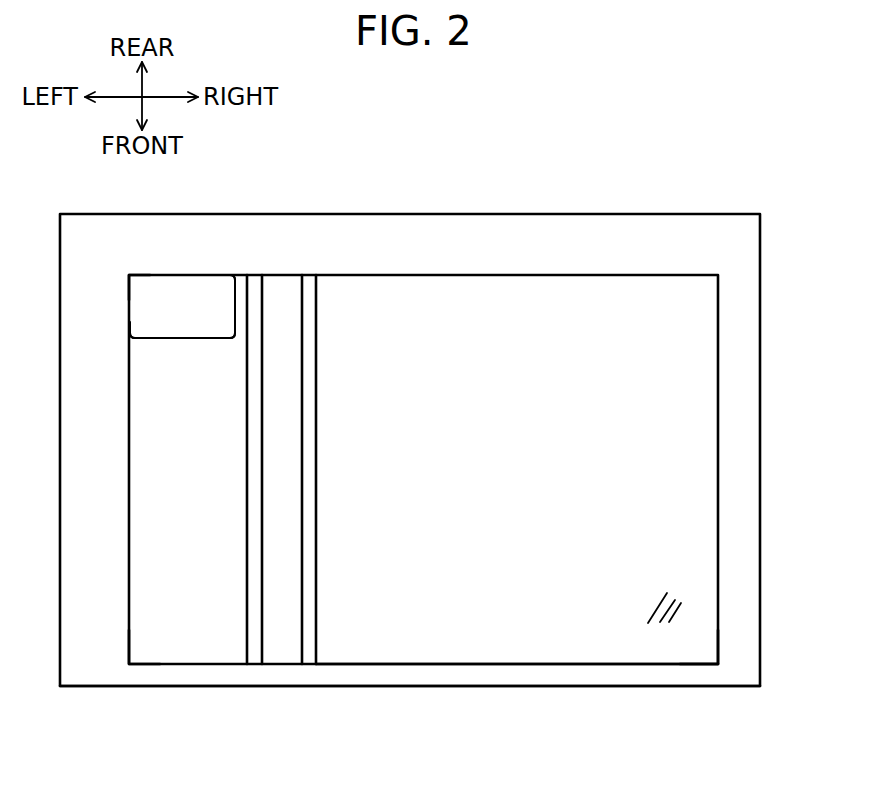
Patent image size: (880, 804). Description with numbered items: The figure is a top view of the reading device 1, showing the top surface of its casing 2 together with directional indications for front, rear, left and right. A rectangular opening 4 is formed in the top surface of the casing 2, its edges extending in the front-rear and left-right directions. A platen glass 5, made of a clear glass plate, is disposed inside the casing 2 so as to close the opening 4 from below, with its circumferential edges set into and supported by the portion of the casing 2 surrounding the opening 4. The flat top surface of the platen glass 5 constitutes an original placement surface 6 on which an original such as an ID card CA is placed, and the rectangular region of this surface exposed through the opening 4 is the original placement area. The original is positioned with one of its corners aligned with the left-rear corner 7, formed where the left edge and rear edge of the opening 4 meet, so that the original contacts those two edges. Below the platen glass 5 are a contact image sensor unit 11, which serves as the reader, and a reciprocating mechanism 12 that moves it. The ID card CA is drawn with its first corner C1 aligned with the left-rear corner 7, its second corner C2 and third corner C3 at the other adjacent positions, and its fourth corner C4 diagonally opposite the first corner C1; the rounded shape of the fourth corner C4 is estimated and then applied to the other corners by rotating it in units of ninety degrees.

The image forming apparatus 1 is at (593, 210).
The casing 2 is at (538, 688).
The opening 4 is at (128, 627).
The platen glass 5 is at (667, 525).
The original placement surface 6 is at (348, 630).
The left-rear corner 7 is at (130, 275).
The contact image sensor unit 11 is at (303, 361).
The reciprocating mechanism 12 is at (316, 424).
The first corner C1 is at (135, 278).
The second corner C2 is at (138, 335).
The third corner C3 is at (230, 279).
The fourth corner C4 is at (232, 335).
The ID card CA is at (175, 340).